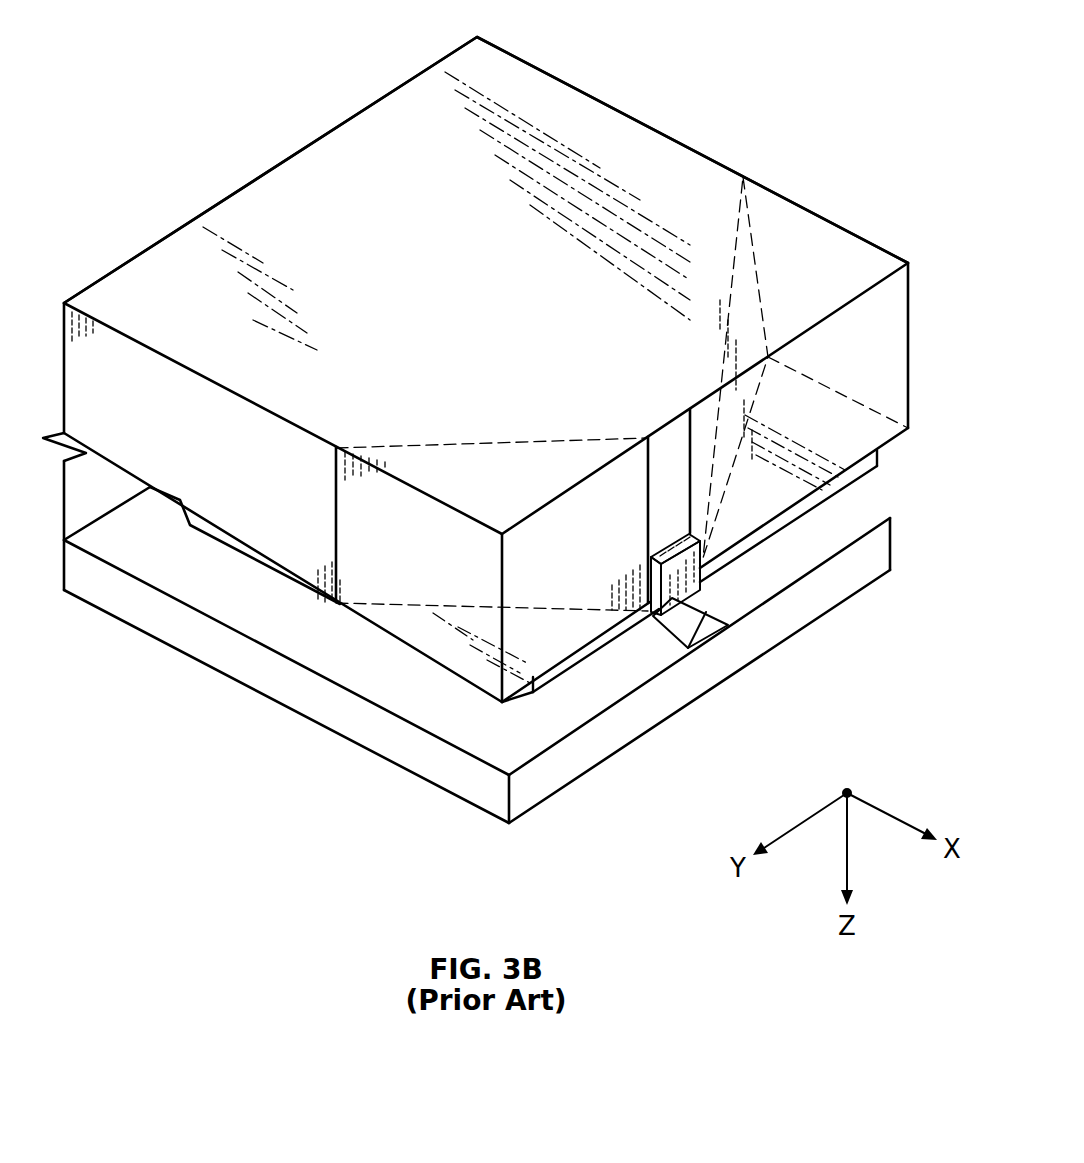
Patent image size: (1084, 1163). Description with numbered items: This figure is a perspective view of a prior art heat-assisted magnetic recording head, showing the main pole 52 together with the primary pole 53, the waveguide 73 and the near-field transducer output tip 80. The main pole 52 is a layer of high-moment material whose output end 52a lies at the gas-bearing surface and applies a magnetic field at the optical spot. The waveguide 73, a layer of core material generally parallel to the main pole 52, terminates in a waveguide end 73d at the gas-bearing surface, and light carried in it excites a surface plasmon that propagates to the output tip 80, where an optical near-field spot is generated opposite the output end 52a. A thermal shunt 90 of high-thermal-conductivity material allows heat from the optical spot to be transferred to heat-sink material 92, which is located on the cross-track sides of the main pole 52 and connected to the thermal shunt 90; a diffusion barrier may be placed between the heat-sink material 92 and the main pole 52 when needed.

The main pole 52 is at (633, 350).
The output end of main pole 52a is at (692, 553).
The primary pole 53 is at (353, 143).
The waveguide 73 is at (477, 654).
The waveguide end 73d is at (732, 658).
The output tip of NFT 80 is at (683, 627).
The thermal shunt 90 is at (862, 475).
The heat-sink material 92 is at (870, 263).